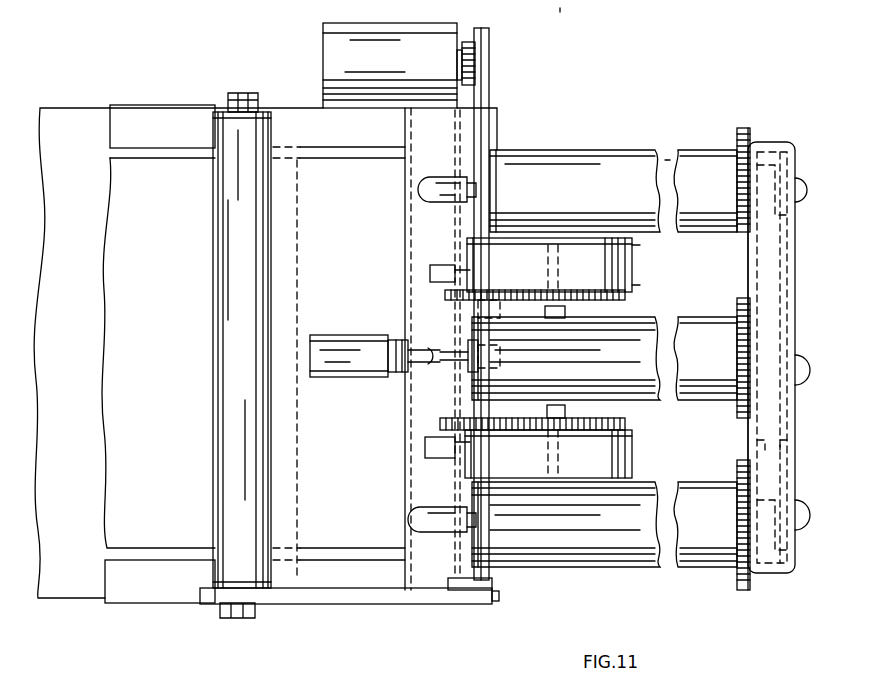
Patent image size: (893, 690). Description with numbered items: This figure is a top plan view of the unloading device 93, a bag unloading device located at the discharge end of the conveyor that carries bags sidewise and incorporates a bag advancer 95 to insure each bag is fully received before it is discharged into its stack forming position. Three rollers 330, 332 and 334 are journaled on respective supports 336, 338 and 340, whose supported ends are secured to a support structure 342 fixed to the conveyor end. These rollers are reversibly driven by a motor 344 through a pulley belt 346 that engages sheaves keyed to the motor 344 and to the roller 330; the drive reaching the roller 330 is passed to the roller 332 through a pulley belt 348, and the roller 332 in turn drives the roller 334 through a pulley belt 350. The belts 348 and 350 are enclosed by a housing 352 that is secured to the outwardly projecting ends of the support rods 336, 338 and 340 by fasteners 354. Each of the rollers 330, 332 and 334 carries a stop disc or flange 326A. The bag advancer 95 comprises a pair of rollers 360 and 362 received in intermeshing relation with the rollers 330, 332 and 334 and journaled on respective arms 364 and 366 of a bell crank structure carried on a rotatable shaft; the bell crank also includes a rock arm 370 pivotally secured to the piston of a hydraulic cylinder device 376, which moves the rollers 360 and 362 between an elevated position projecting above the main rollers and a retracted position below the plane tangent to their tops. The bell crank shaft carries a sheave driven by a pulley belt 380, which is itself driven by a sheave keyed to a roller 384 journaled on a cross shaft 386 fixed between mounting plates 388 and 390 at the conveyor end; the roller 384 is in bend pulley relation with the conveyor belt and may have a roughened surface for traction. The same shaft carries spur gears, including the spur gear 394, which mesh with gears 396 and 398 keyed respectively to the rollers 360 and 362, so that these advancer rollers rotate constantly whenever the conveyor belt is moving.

The unloading device 93 is at (708, 132).
The bag advancer 95 is at (613, 226).
The stop disc or flange 326A is at (748, 128).
The roller 330 is at (583, 160).
The roller 332 is at (637, 332).
The roller 334 is at (630, 548).
The support 336 is at (430, 188).
The support 338 is at (432, 368).
The support 340 is at (428, 520).
The support structure 342 is at (433, 568).
The motor 344 is at (418, 40).
The pulley belt 346 is at (482, 98).
The pulley belt 348 is at (762, 265).
The pulley belt 350 is at (790, 446).
The housing 352 is at (776, 150).
The fasteners 354 is at (800, 188).
The roller 360 is at (578, 255).
The roller 362 is at (585, 540).
The arm 364 is at (540, 308).
The arm 366 is at (526, 434).
The rock arm 370 is at (561, 6).
The hydraulic cylinder device 376 is at (378, 430).
The pulley belt 380 is at (377, 604).
The roller 384 is at (224, 190).
The cross shaft 386 is at (243, 93).
The mounting plate 388 is at (296, 108).
The mounting plate 390 is at (178, 596).
The spur gear 394 is at (445, 297).
The gear 396 is at (618, 285).
The gear 398 is at (628, 425).